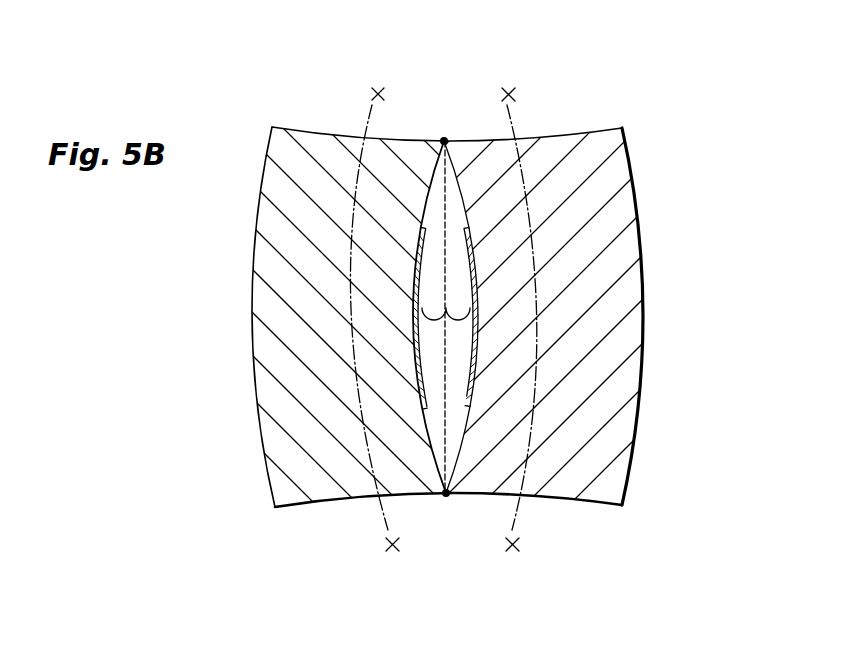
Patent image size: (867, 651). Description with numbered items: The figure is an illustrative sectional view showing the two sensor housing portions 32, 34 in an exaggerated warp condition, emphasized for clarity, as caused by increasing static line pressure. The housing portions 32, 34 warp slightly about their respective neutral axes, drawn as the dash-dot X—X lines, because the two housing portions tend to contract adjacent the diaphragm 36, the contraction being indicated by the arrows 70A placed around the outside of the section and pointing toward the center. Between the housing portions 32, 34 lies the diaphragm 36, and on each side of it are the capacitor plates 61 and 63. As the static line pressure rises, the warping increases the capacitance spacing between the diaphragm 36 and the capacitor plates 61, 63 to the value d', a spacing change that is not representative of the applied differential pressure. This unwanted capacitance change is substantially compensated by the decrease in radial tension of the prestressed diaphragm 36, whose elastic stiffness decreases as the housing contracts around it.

The housing portion 32 is at (268, 368).
The housing portion 34 is at (635, 350).
The diaphragm 36 is at (448, 437).
The capacitor plate 61 is at (416, 335).
The capacitor plate 63 is at (480, 330).
The capacitance spacing d' is at (466, 291).
The arrows 70A is at (274, 112).